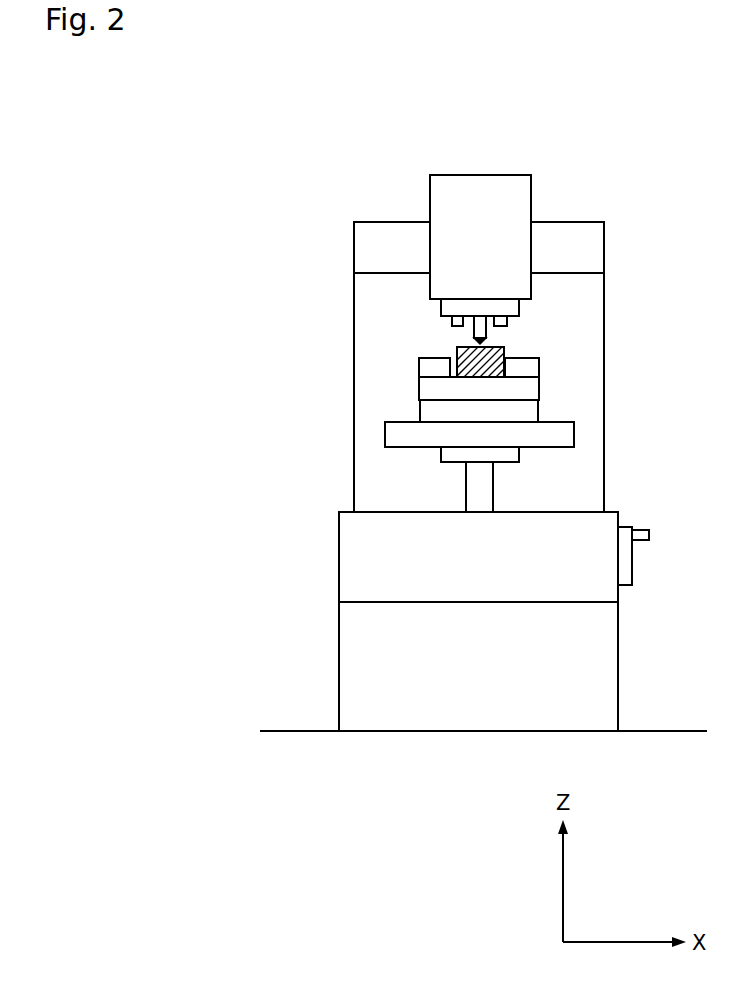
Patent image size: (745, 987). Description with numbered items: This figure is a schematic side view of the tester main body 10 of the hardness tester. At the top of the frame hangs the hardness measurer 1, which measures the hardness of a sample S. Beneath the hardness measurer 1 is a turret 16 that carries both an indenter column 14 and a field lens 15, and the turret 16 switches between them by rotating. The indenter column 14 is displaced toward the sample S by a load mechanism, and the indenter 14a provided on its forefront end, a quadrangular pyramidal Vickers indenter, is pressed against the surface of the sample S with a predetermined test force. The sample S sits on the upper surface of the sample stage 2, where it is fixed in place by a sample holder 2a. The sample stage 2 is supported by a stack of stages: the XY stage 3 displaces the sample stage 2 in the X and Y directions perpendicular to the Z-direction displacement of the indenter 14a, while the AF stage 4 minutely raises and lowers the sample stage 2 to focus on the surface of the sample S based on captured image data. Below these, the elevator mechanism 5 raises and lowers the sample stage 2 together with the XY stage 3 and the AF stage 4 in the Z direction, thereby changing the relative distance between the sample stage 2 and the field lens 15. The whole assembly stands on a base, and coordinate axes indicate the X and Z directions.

The tester main body 10 is at (638, 139).
The hardness measurer 1 is at (531, 185).
The turret 16 is at (519, 308).
The field lens 15 is at (452, 320).
The indenter column 14 is at (572, 361).
The indenter 14a is at (483, 343).
The sample S is at (504, 377).
The sample holder 2a is at (419, 362).
The sample stage 2 is at (419, 390).
The AF stage 4 is at (538, 413).
The XY stage 3 is at (387, 426).
The elevator mechanism 5 is at (465, 455).